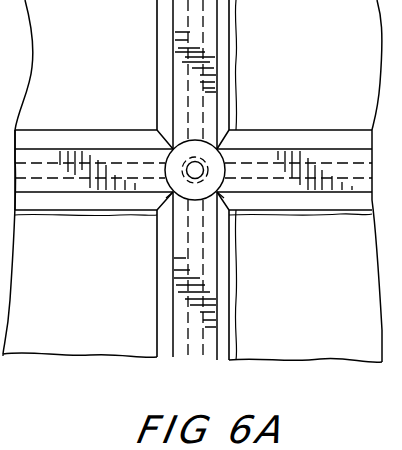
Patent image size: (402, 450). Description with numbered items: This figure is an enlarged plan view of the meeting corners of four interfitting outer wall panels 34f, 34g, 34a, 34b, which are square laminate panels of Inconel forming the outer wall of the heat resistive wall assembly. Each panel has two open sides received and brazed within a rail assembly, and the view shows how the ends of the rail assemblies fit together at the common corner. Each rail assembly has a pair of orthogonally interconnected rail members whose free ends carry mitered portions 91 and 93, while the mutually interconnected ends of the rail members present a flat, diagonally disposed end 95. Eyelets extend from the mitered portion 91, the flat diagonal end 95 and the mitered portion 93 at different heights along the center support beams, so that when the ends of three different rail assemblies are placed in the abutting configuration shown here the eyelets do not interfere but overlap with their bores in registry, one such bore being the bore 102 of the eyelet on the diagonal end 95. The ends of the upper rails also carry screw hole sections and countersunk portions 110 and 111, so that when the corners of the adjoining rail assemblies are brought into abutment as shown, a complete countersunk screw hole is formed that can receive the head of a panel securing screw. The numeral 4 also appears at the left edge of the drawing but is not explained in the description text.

The outer wall panel 34f is at (108, 58).
The outer wall panel 34g is at (330, 61).
The outer wall panel 34a is at (112, 313).
The outer wall panel 34b is at (330, 313).
The flat, diagonally disposed end 95 is at (209, 146).
The countersunk portion 110 is at (192, 150).
The mitered portion 91 is at (182, 166).
The mitered portion 93 is at (182, 190).
The countersunk portion 111 is at (167, 177).
The base plate 4 is at (7, 170).
The bore 102 is at (14, 401).